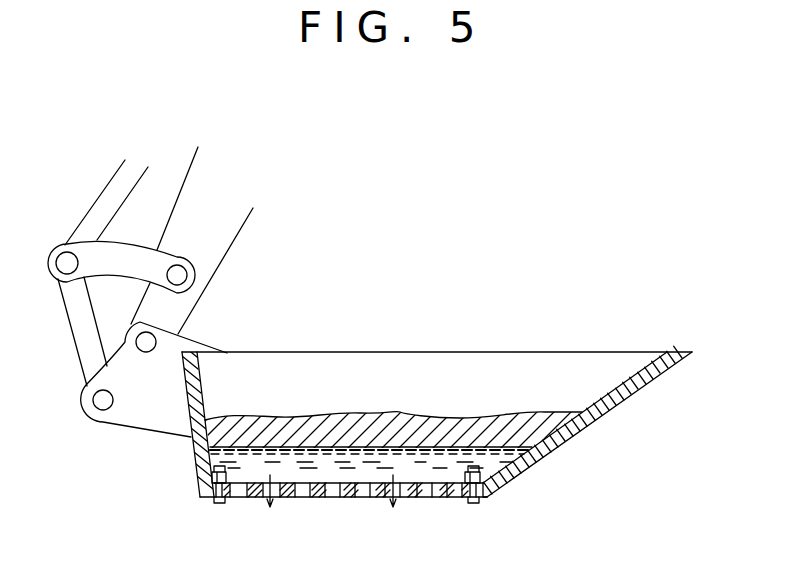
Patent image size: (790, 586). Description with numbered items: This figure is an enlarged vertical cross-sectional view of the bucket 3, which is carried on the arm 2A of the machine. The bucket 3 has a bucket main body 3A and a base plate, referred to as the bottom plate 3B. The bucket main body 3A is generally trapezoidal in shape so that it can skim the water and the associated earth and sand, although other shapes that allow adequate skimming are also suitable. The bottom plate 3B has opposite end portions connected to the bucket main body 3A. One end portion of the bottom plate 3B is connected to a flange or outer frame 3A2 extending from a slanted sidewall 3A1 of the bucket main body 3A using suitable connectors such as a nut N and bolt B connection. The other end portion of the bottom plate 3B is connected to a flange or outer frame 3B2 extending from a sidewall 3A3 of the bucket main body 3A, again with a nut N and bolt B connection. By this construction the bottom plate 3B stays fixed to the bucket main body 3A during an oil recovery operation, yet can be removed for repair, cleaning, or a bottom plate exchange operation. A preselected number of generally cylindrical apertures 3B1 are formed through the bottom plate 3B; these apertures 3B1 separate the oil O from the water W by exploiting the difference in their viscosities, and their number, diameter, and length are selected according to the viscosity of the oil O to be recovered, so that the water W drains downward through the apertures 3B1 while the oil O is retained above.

The arm 2A is at (213, 240).
The bucket 3 is at (558, 351).
The bucket main body 3A is at (618, 397).
The slanted sidewall 3A1 is at (567, 443).
The flange or outer frame 3A2 is at (483, 494).
The sidewall 3A3 is at (197, 416).
The bottom plate 3B is at (408, 492).
The apertures 3B1 is at (363, 490).
The flange or outer frame 3B2 is at (218, 498).
The bolt B is at (477, 500).
The nut N is at (480, 472).
The oil O is at (325, 430).
The water W is at (460, 457).